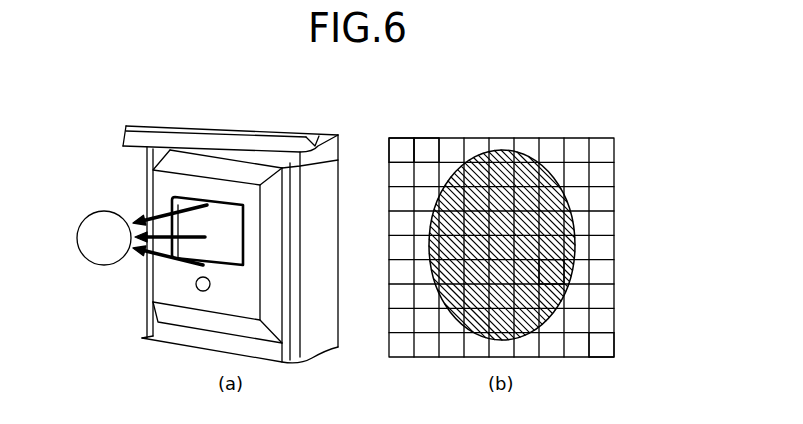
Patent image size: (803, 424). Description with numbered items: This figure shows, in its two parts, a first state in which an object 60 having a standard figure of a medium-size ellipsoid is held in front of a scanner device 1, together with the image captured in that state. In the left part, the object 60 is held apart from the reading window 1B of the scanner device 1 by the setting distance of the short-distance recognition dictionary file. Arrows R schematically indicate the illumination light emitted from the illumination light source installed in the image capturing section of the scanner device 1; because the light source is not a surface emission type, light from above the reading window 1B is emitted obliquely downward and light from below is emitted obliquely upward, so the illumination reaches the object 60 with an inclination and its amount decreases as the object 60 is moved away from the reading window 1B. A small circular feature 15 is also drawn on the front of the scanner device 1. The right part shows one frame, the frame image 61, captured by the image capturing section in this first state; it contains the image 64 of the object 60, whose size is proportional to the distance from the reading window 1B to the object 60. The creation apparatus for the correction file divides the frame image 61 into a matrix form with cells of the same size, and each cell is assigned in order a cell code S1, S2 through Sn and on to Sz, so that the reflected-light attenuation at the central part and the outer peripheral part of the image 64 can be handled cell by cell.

The scanner device 1 is at (330, 133).
The reading window 1B is at (182, 203).
The arrows indicating illumination light R is at (138, 263).
The object 60 is at (88, 243).
The human body sensor 15 is at (200, 292).
The frame image 61 is at (615, 221).
The cell code S1 is at (403, 145).
The cell code S2 is at (425, 145).
The image of the object 64 is at (520, 152).
The cell code Sn is at (556, 270).
The cell code Sz is at (605, 344).